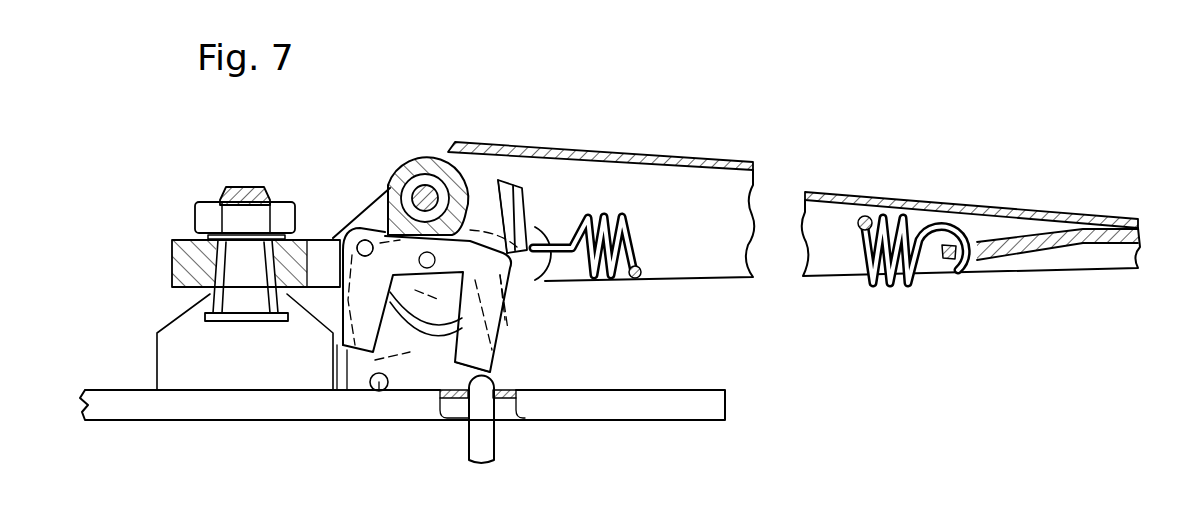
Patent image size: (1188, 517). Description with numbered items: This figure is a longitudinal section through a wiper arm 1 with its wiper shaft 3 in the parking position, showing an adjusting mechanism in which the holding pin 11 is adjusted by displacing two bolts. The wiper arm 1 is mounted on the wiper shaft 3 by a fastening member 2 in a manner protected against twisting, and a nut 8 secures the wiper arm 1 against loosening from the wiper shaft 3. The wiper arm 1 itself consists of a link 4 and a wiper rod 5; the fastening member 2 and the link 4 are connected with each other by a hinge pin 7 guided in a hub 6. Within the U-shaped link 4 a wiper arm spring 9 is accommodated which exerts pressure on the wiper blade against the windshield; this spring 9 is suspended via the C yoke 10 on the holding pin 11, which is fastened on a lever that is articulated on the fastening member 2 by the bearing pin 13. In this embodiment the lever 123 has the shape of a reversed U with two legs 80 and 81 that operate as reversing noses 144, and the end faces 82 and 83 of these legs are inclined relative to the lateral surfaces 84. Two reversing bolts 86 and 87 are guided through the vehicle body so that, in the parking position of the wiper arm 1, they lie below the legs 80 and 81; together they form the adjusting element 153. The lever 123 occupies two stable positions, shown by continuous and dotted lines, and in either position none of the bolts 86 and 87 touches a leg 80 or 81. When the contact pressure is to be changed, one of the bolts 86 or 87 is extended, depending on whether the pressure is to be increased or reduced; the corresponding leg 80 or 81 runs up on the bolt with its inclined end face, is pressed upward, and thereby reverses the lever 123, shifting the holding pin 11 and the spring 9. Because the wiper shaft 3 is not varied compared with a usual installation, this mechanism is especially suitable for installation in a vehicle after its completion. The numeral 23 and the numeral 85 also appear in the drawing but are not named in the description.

The wiper arm 1 is at (990, 188).
The fastening member 2 is at (190, 247).
The wiper shaft 3 is at (233, 268).
The link 4 is at (830, 195).
The wiper rod 5 is at (1138, 236).
The hub 6 is at (420, 192).
The hinge pin 7 is at (430, 200).
The nut 8 is at (210, 213).
The wiper arm spring 9 is at (638, 279).
The C yoke 10 is at (545, 268).
The holding pin 11 is at (355, 237).
The bearing pin 13 is at (421, 252).
The torsion spring 23 is at (946, 262).
The leg 80 is at (343, 390).
The leg 81 is at (500, 362).
The end face 82 is at (355, 390).
The end face 83 is at (507, 398).
The lateral surfaces 84 is at (507, 318).
The pin edge 85 is at (497, 444).
The reversing bolt 86 is at (385, 395).
The reversing bolt 87 is at (485, 438).
The lever 123 is at (368, 244).
The reversing noses 144 is at (398, 345).
The adjusting element 153 is at (395, 397).